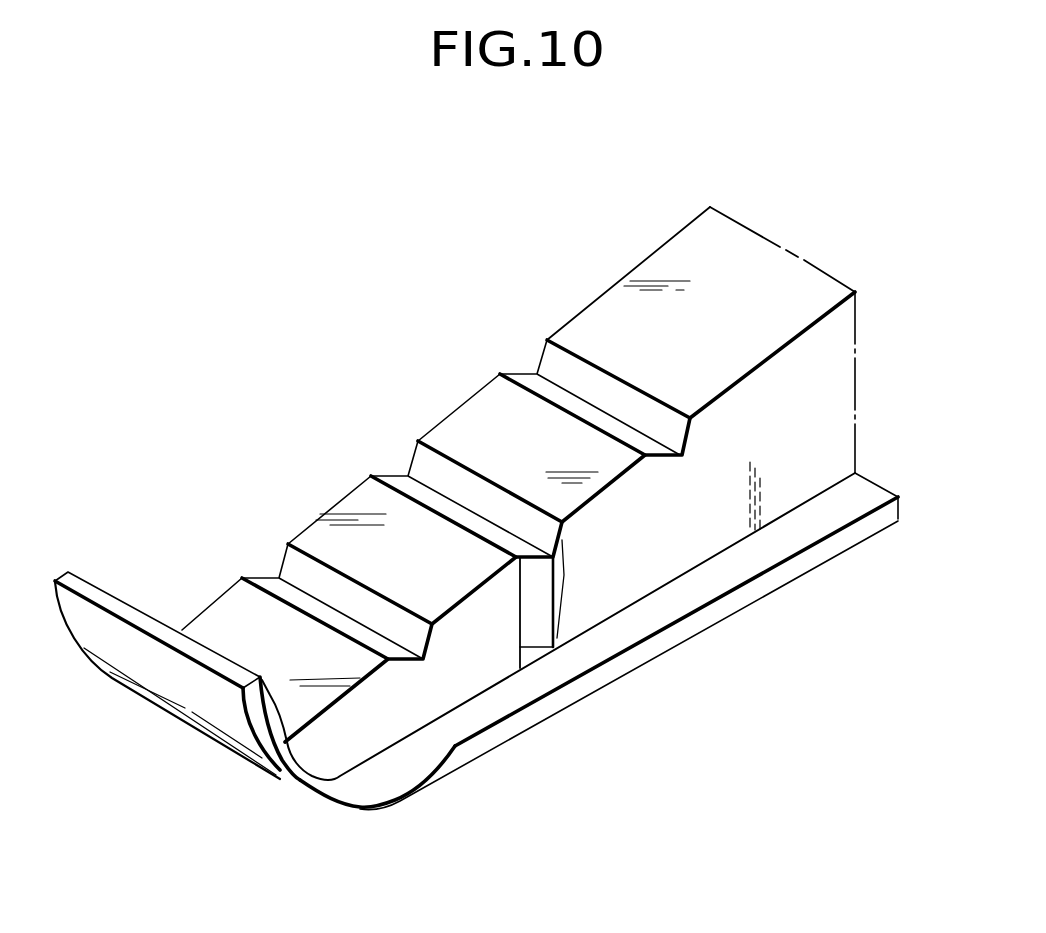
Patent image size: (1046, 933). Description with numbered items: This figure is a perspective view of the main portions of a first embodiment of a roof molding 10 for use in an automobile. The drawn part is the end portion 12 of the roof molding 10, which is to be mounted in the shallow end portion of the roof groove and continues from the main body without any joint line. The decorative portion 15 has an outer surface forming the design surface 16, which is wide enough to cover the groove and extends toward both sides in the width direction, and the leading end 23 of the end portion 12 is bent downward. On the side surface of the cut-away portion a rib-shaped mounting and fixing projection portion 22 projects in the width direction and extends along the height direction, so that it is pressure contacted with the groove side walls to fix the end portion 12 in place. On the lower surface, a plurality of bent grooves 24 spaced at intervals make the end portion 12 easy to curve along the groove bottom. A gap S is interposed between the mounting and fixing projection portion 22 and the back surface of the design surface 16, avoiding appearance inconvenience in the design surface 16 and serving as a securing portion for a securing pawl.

The roof molding 10 is at (713, 200).
The end portion 12 is at (437, 783).
The decorative portion 15 is at (762, 579).
The design surface 16 is at (639, 665).
The mounting and fixing projection portion 22 is at (546, 541).
The leading end 23 is at (257, 697).
The bent grooves 24 is at (548, 362).
The gap S is at (519, 665).